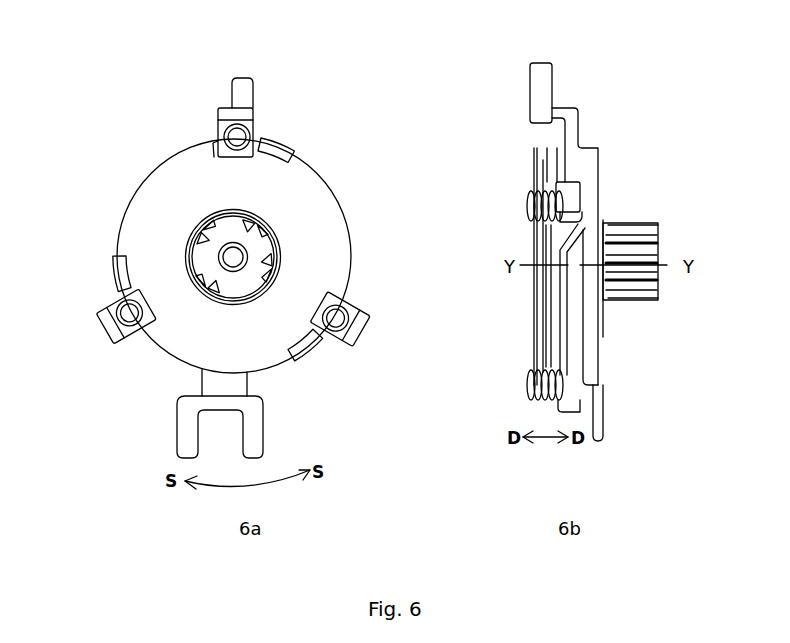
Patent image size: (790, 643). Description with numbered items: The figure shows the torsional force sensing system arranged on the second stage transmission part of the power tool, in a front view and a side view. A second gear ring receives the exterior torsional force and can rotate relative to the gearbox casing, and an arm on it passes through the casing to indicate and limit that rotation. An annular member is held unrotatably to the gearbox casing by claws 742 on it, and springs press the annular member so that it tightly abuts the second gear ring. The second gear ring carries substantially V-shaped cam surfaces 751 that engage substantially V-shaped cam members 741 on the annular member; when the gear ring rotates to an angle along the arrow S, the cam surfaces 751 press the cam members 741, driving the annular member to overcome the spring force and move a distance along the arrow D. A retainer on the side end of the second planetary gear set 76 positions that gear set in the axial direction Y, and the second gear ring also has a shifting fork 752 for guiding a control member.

The second planetary gear set 76 is at (260, 217).
The cam members 741 is at (587, 217).
The claws 742 is at (227, 115).
The cam surfaces 751 is at (585, 207).
The shifting fork 752 is at (253, 417).